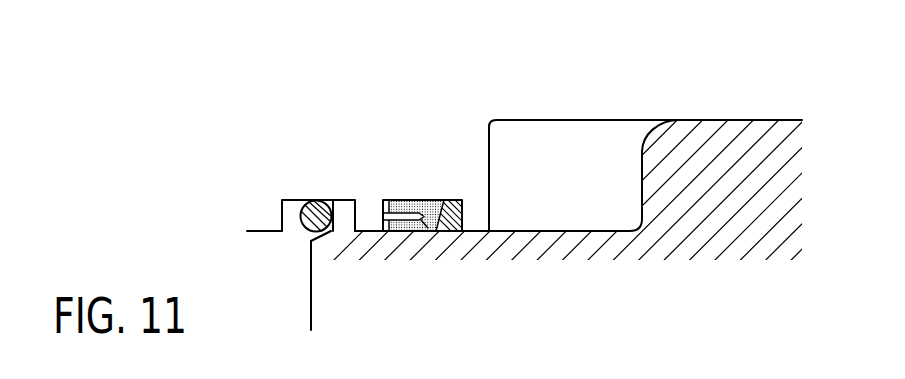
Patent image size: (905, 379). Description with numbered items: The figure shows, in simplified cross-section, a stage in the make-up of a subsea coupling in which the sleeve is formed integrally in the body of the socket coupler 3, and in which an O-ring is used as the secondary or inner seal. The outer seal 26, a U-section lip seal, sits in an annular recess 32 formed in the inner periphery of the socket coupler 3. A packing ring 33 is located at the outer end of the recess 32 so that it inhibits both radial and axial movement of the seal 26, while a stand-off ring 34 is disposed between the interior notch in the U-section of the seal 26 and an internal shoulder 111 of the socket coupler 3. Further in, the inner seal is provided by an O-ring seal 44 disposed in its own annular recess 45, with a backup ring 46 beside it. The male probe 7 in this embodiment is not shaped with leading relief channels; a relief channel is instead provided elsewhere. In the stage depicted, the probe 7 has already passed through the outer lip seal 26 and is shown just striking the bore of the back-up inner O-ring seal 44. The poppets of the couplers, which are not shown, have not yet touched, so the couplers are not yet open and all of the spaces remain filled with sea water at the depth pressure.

The socket coupler 3 is at (505, 78).
The male probe 7 is at (310, 265).
The annular recess 45 is at (282, 200).
The O-ring seal 44 is at (317, 200).
The backup ring 46 is at (350, 200).
The internal shoulder 111 is at (367, 212).
The annular recess 32 is at (389, 200).
The stand-off ring 34 is at (383, 217).
The outer seal 26 is at (425, 220).
The packing ring 33 is at (463, 219).